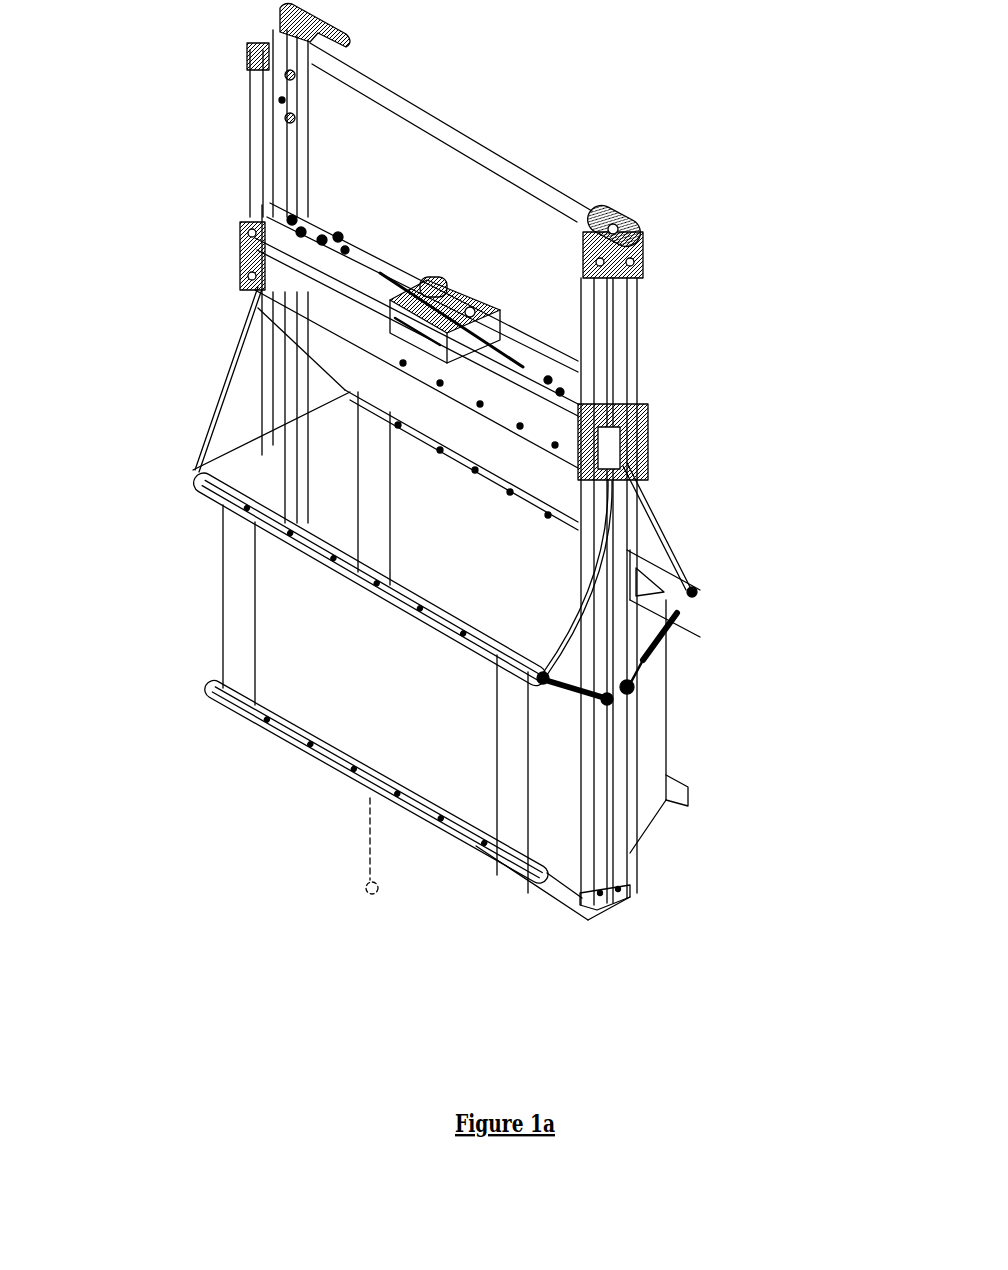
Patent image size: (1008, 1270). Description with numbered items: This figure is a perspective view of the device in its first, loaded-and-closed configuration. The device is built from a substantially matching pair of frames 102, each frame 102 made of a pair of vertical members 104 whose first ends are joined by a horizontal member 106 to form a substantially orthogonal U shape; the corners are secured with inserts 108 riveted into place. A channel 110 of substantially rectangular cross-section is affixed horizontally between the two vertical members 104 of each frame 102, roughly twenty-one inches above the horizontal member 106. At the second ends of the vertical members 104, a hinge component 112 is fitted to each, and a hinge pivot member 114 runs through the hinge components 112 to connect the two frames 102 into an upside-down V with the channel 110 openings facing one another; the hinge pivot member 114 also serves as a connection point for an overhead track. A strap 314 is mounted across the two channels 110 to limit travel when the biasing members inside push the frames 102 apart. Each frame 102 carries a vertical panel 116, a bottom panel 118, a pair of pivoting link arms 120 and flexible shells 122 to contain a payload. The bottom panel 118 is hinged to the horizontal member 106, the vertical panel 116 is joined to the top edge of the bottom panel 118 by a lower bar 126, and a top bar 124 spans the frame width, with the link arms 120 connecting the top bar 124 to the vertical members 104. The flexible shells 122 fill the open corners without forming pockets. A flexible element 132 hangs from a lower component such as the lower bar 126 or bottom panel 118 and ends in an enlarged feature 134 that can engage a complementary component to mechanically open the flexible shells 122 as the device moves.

The frame 102 is at (255, 135).
The vertical member 104 is at (590, 339).
The horizontal member 106 is at (563, 912).
The insert 108 is at (600, 910).
The channel 110 is at (283, 270).
The hinge component 112 is at (623, 229).
The hinge pivot member 114 is at (520, 167).
The vertical panel 116 is at (283, 657).
The bottom panel 118 is at (662, 830).
The link arm 120 is at (190, 427).
The flexible shell 122 is at (565, 786).
The top bar 124 is at (220, 503).
The lower bar 126 is at (205, 701).
The flexible element 132 is at (368, 838).
The enlarged feature 134 is at (365, 890).
The strap 314 is at (440, 300).